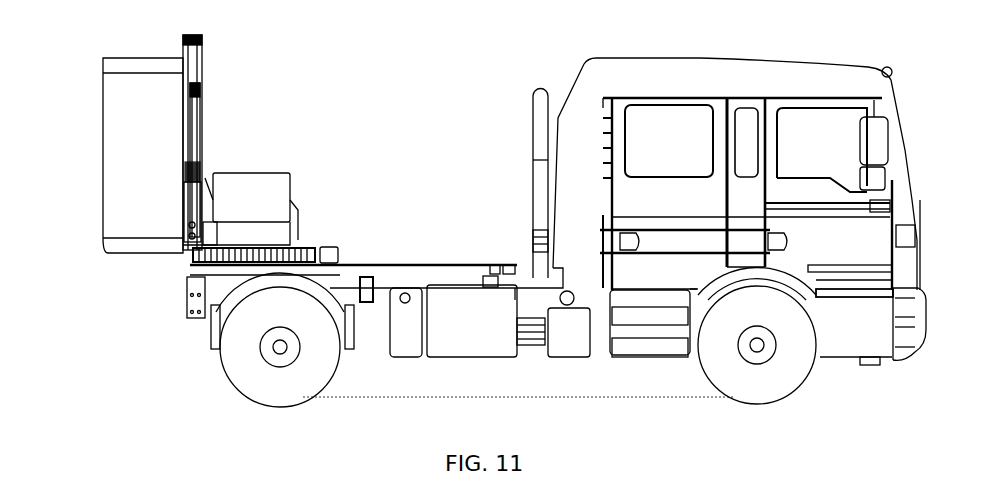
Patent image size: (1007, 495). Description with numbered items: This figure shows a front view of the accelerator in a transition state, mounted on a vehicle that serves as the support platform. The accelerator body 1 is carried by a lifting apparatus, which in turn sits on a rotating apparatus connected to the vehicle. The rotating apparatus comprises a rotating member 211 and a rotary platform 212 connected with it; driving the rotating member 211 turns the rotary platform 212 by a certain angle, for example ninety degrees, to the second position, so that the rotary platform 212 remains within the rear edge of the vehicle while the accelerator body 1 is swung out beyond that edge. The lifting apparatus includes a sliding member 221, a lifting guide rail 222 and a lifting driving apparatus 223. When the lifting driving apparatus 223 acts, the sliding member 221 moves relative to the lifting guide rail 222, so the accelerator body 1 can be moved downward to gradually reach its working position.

The accelerator body 1 is at (147, 202).
The rotating member 211 is at (250, 258).
The rotary platform 212 is at (252, 203).
The sliding member 221 is at (187, 173).
The lifting guide rail 222 is at (190, 57).
The lifting driving apparatus 223 is at (195, 135).